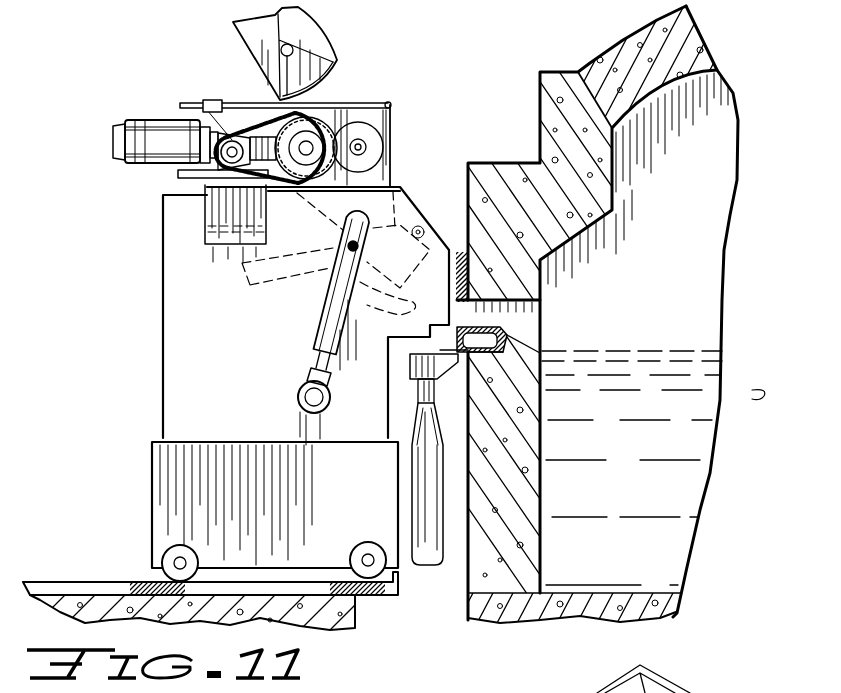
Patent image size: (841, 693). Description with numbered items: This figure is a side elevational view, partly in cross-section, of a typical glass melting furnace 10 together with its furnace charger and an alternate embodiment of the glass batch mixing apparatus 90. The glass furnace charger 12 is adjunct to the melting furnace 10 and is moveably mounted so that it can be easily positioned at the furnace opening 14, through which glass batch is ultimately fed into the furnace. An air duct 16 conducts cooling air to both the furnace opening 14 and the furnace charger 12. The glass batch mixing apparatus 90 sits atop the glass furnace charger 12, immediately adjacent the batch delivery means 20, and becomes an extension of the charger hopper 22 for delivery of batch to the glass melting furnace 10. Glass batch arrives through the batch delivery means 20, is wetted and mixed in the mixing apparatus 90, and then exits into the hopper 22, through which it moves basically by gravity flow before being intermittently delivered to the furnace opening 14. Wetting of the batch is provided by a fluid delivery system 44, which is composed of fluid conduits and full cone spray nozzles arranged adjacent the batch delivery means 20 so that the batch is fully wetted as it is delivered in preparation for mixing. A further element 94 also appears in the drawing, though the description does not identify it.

The glass melting furnace 10 is at (711, 213).
The glass furnace charger 12 is at (254, 352).
The furnace opening 14 is at (524, 327).
The air duct 16 is at (440, 563).
The batch delivery means 20 is at (318, 43).
The hopper 22 is at (336, 205).
The fluid delivery system 44 is at (197, 108).
The glass batch mixing apparatus 90 is at (157, 175).
The roof element (adjacent figure) 94 is at (712, 692).